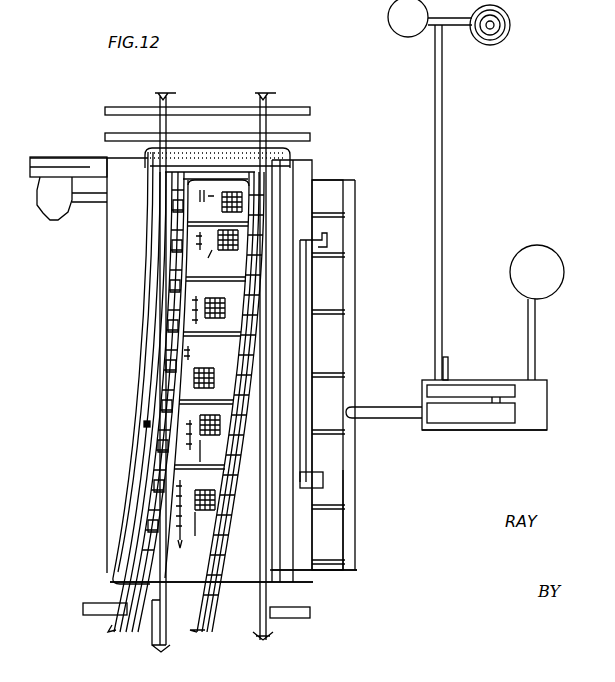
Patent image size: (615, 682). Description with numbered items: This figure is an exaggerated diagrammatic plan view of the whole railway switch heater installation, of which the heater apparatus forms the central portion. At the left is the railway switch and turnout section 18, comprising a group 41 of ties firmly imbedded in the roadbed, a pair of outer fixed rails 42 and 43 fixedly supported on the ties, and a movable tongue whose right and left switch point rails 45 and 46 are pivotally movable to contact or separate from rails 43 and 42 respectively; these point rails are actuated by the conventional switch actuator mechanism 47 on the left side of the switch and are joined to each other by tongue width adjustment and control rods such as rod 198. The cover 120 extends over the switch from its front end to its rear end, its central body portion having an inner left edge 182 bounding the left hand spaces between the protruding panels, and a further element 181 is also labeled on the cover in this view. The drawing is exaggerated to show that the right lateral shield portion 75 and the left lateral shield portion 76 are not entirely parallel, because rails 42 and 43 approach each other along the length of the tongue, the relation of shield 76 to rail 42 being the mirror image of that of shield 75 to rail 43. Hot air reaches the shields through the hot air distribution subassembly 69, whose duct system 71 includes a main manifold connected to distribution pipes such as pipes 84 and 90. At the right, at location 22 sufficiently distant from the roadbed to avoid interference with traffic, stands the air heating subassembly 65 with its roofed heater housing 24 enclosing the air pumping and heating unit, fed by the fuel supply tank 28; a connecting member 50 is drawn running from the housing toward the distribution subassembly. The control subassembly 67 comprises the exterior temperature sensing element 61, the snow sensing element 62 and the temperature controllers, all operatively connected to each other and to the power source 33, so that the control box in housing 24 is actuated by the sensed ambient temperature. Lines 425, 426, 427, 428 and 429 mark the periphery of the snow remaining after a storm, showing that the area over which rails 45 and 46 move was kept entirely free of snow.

The left outer fixed rail 42 is at (160, 96).
The right outer fixed rail 43 is at (267, 97).
The snow periphery line 425 is at (230, 150).
The switch actuator mechanism 47 is at (62, 178).
The right lateral shield portion 75 is at (298, 178).
The distribution pipe 90 is at (332, 183).
The snow periphery line 429 is at (150, 200).
The snow periphery line 426 is at (219, 206).
The tongue width adjustment and control rod 198 is at (217, 251).
The snow periphery line 428 is at (190, 290).
The cover 120 is at (232, 373).
The hinge 181 is at (236, 403).
The inner left edge of central cover body portion 182 is at (197, 509).
The left switch point rail 46 is at (152, 402).
The right switch point rail 45 is at (235, 533).
The left lateral shield portion 76 is at (107, 310).
The group of ties 41 is at (152, 360).
The railway switch and turnout section 18 is at (146, 424).
The duct system 71 is at (356, 262).
The snow periphery line 427 is at (307, 298).
The hot air distribution subassembly 69 is at (360, 482).
The distribution pipe 84 is at (318, 570).
The temperature sensing element 61 is at (395, 36).
The snow sensing element 62 is at (505, 32).
The fuel supply tank 28 is at (560, 265).
The power source 33 is at (450, 372).
The control subassembly 67 is at (490, 382).
The rod 50 is at (402, 407).
The location 22 is at (560, 402).
The air heating subassembly 65 is at (473, 423).
The heater housing 24 is at (512, 432).